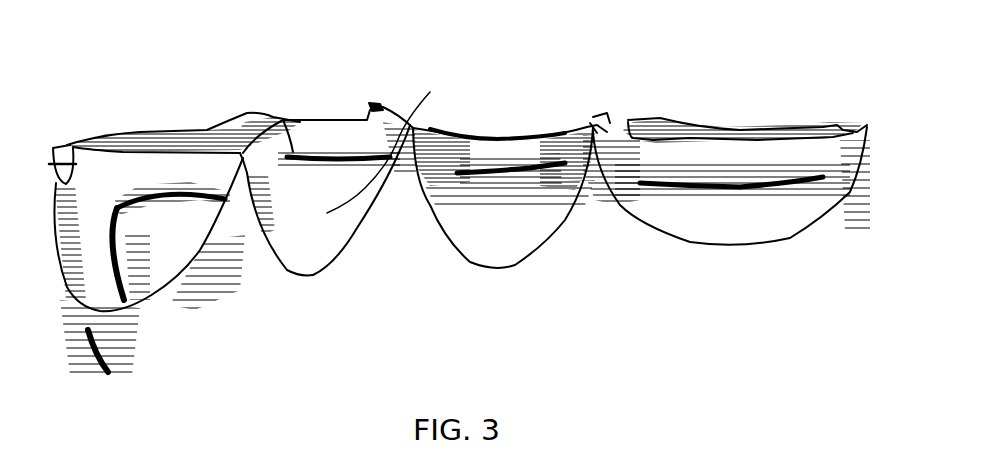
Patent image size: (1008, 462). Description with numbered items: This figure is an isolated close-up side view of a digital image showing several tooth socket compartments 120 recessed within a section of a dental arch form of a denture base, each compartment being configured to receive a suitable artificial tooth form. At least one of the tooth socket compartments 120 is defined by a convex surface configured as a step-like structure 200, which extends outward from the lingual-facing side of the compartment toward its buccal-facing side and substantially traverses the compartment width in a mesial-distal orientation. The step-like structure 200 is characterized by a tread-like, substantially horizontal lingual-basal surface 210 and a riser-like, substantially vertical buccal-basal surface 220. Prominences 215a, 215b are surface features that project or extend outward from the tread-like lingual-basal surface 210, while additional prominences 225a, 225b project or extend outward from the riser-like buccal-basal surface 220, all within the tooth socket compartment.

The tooth socket compartment 120 is at (573, 207).
The step-like structure 200 is at (419, 158).
The tread-like lingual-basal surface 210 is at (337, 152).
The prominence 215a is at (377, 152).
The prominence 215b is at (293, 150).
The riser-like buccal-basal surface 220 is at (430, 92).
The prominence 225a is at (357, 213).
The prominence 225b is at (293, 213).